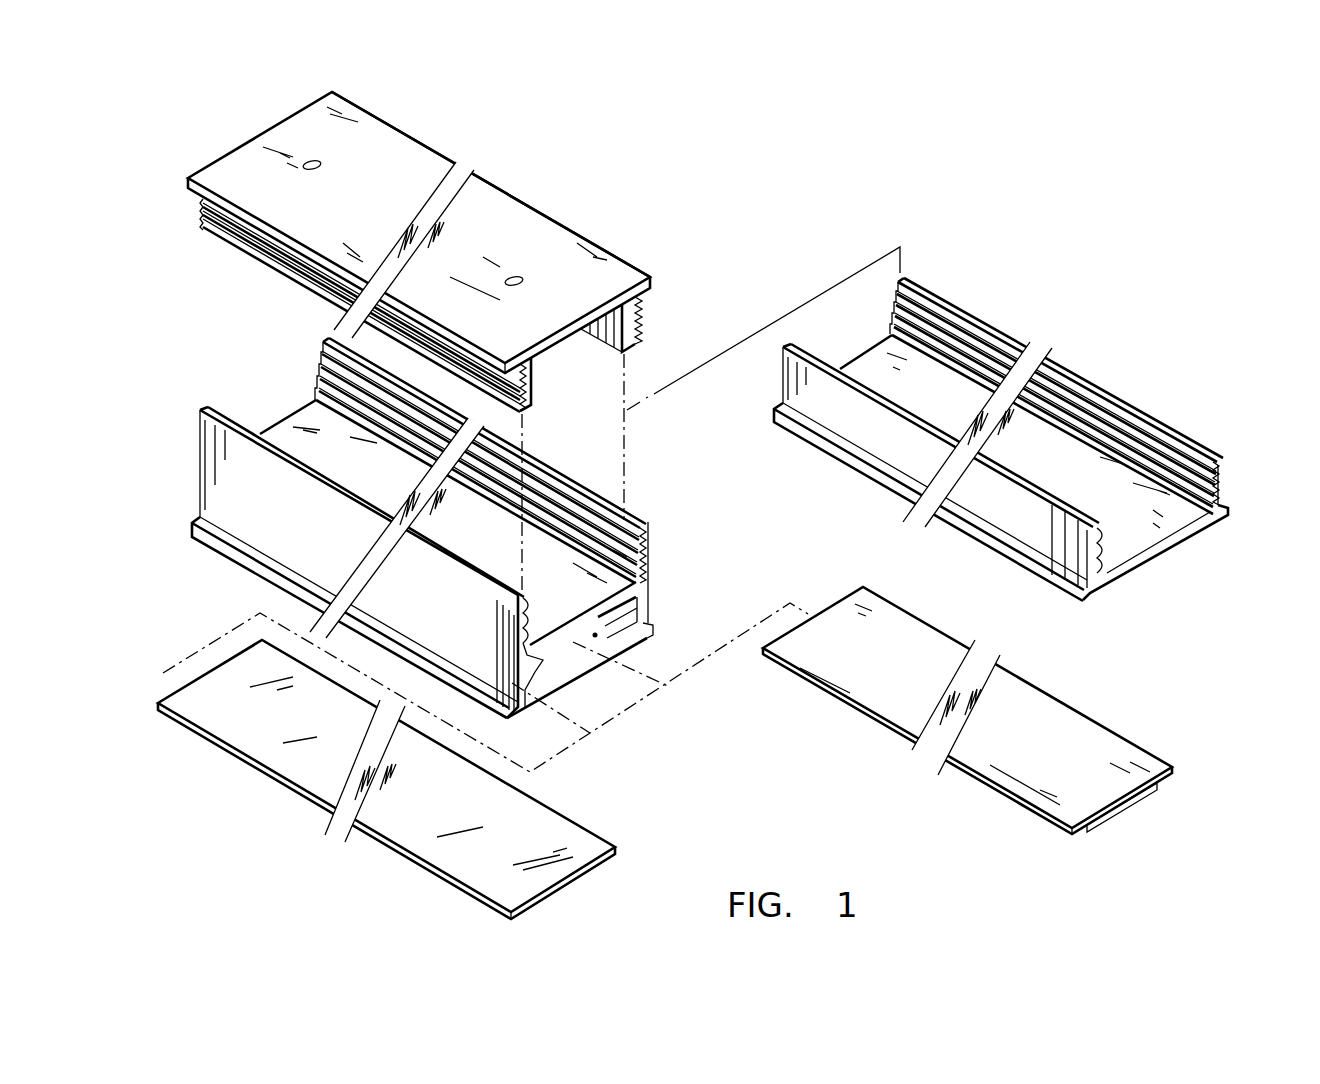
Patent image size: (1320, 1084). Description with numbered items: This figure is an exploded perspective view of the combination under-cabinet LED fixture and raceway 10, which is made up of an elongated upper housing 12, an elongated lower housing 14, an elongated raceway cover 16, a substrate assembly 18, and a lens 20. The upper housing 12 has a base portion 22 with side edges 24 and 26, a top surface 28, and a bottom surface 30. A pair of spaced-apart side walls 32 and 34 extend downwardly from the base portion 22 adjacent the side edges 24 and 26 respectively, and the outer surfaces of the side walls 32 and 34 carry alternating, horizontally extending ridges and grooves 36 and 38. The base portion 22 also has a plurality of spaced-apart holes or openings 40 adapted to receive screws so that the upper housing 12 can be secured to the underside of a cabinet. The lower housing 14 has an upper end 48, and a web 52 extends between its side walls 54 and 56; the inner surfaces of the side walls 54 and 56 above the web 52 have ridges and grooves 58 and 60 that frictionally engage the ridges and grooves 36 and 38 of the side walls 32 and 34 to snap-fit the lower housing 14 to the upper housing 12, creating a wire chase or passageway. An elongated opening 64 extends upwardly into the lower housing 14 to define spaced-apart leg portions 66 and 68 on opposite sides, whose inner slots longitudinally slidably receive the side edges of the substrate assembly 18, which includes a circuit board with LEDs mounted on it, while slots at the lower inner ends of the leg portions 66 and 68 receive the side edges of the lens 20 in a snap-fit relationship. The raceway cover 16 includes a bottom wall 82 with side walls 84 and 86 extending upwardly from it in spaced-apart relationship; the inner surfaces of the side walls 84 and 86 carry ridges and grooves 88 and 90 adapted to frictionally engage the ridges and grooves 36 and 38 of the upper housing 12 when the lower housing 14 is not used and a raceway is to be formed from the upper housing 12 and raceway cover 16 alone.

The combination under-cabinet LED fixture and raceway 10 is at (792, 248).
The elongated upper housing 12 is at (441, 281).
The elongated lower housing 14 is at (455, 521).
The elongated raceway cover 16 is at (1017, 443).
The substrate assembly 18 is at (1082, 687).
The lens 20 is at (582, 803).
The base portion 22 is at (575, 268).
The side edge 24 is at (202, 199).
The side edge 26 is at (403, 134).
The top surface 28 is at (340, 210).
The bottom surface 30 is at (557, 337).
The side wall 32 is at (538, 406).
The side wall 34 is at (640, 310).
The ridges and grooves 36 is at (307, 273).
The ridges and grooves 38 is at (634, 330).
The holes or openings 40 is at (304, 161).
The upper end 48 is at (253, 383).
The web 52 is at (455, 542).
The side wall 54 is at (307, 550).
The side wall 56 is at (640, 597).
The ridges and grooves 58 is at (524, 628).
The ridges and grooves 60 is at (607, 530).
The elongated opening 64 is at (600, 647).
The leg portion 66 is at (530, 687).
The leg portion 68 is at (637, 622).
The bottom wall 82 is at (1133, 540).
The side wall 84 is at (1063, 567).
The side wall 86 is at (1217, 487).
The ridges and grooves 88 is at (1100, 547).
The ridges and grooves 90 is at (1150, 452).